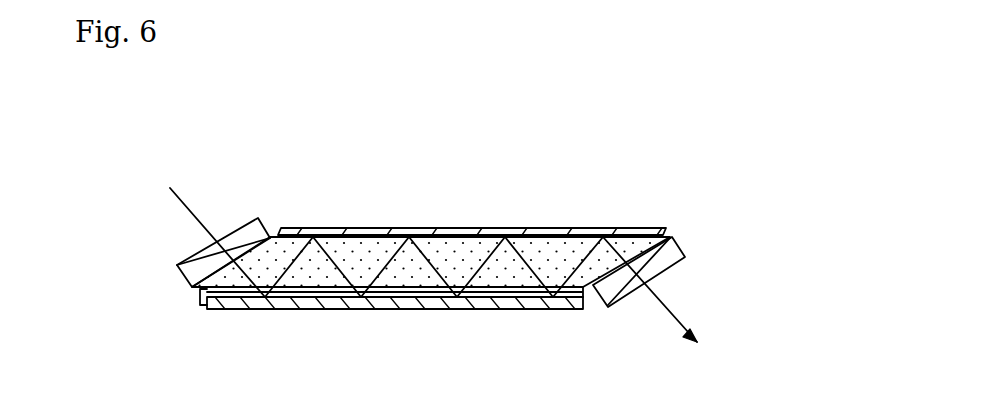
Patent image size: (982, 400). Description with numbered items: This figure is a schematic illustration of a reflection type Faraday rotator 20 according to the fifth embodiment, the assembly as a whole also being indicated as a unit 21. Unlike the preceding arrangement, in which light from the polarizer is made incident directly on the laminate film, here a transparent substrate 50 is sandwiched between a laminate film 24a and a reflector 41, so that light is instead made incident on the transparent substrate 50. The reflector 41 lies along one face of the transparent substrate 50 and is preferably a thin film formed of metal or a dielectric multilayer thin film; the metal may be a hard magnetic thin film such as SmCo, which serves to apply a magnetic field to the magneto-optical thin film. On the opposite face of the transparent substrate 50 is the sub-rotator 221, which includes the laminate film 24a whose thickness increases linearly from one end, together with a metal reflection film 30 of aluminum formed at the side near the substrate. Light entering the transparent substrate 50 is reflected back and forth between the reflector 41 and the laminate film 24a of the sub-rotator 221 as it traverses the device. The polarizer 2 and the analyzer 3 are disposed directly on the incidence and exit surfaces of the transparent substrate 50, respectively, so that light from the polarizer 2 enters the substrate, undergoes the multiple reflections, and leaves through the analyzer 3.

The reflection type Faraday rotator 20 is at (635, 145).
The display unit 21 is at (723, 157).
The transparent substrate 50 is at (603, 200).
The reflector 41 is at (478, 232).
The sub-rotator 221 is at (285, 315).
The metal reflection film 30 is at (217, 303).
The laminate film 24a is at (198, 295).
The polarizer 2 is at (146, 257).
The analyzer 3 is at (700, 272).